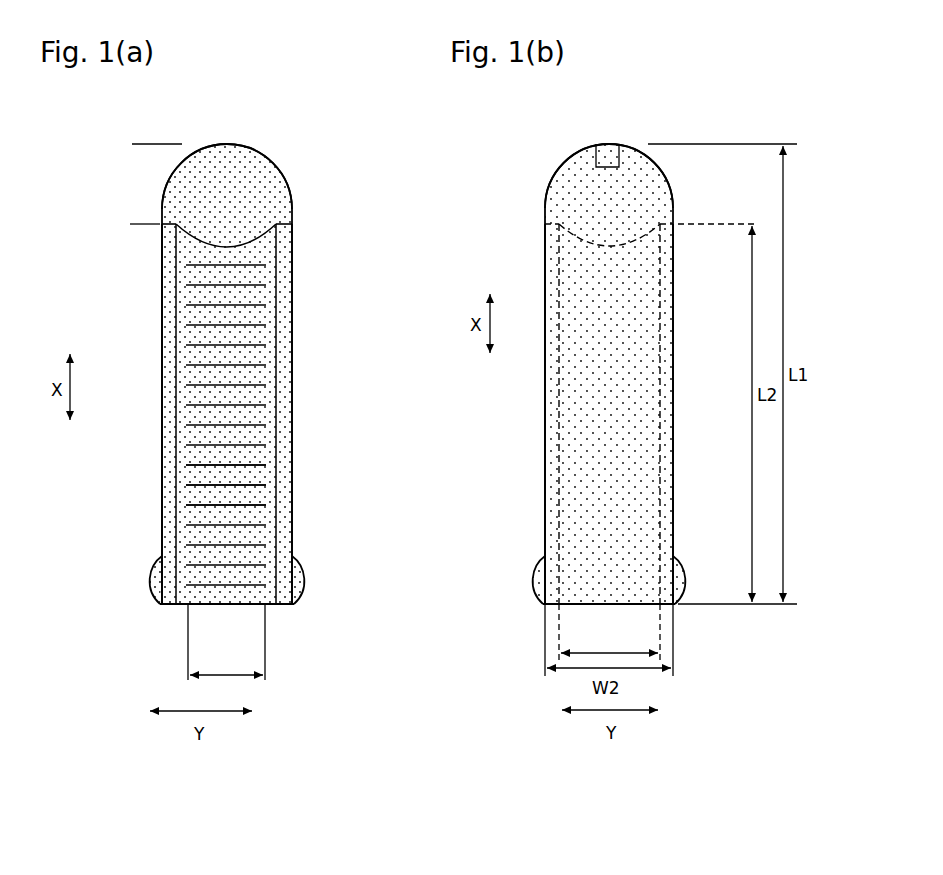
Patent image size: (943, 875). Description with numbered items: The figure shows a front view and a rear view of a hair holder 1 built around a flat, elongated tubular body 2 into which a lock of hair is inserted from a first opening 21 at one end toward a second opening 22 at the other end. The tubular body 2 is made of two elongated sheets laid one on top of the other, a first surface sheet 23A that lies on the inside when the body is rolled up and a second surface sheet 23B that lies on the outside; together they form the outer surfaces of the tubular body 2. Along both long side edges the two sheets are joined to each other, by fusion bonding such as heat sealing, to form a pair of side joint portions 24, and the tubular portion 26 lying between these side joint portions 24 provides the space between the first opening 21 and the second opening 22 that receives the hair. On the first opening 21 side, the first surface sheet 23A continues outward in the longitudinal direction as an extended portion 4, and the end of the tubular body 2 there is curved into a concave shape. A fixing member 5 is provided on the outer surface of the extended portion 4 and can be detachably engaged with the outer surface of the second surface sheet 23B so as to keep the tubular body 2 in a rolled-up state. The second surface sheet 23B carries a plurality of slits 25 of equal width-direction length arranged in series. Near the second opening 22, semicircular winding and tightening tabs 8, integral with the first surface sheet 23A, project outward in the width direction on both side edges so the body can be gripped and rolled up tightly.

In FIG. 1A, the hair holder 1 is at (324, 130).
In FIG. 1B, the hair holder 1 is at (684, 105).
In FIG. 1A, the tubular body 2 is at (122, 226).
In FIG. 1B, the tubular body 2 is at (723, 226).
In FIG. 1A, the extended portion 4 is at (122, 146).
In FIG. 1B, the extended portion 4 is at (723, 146).
In FIG. 1B, the fixing member 5 is at (607, 157).
In FIG. 1A, the winding and tightening tabs 8 is at (161, 570).
In FIG. 1B, the winding and tightening tabs 8 is at (538, 575).
In FIG. 1A, the first opening 21 is at (258, 242).
In FIG. 1B, the first opening 21 is at (598, 245).
In FIG. 1A, the second opening 22 is at (220, 608).
In FIG. 1B, the second opening 22 is at (633, 607).
In FIG. 1A, the first surface sheet 23A is at (185, 470).
In FIG. 1B, the first surface sheet 23A is at (598, 503).
In FIG. 1A, the second surface sheet 23B is at (268, 467).
In FIG. 1B, the second surface sheet 23B is at (587, 297).
In FIG. 1A, the side joint portions 24 is at (170, 328).
In FIG. 1B, the side joint portions 24 is at (558, 380).
In FIG. 1A, the slits 25 is at (243, 383).
In FIG. 1A, the tubular portion 26 is at (242, 497).
In FIG. 1B, the tubular portion 26 is at (613, 473).